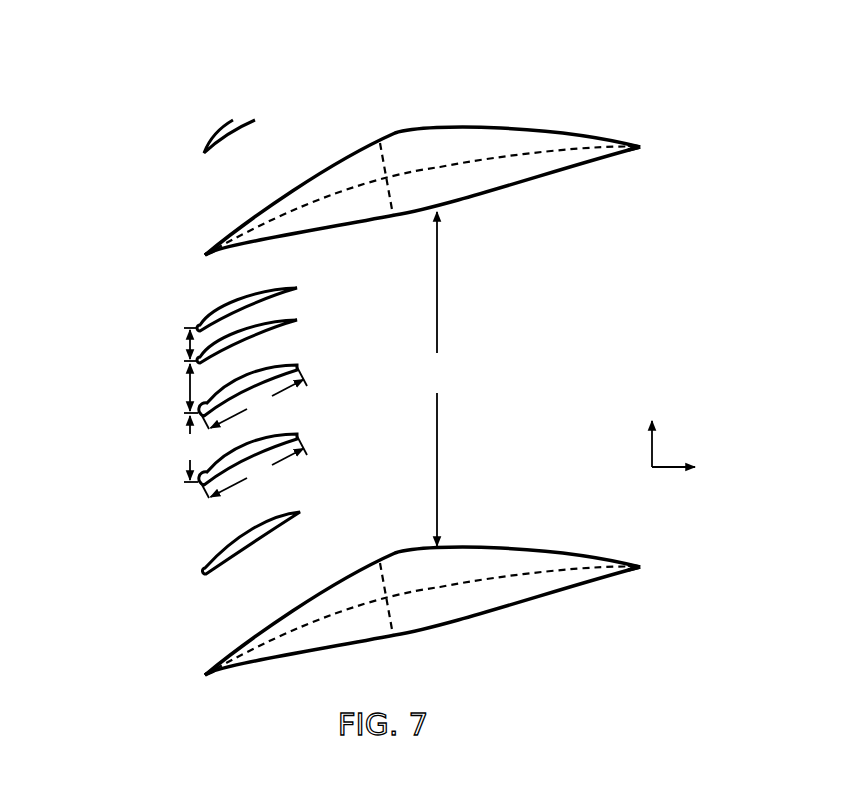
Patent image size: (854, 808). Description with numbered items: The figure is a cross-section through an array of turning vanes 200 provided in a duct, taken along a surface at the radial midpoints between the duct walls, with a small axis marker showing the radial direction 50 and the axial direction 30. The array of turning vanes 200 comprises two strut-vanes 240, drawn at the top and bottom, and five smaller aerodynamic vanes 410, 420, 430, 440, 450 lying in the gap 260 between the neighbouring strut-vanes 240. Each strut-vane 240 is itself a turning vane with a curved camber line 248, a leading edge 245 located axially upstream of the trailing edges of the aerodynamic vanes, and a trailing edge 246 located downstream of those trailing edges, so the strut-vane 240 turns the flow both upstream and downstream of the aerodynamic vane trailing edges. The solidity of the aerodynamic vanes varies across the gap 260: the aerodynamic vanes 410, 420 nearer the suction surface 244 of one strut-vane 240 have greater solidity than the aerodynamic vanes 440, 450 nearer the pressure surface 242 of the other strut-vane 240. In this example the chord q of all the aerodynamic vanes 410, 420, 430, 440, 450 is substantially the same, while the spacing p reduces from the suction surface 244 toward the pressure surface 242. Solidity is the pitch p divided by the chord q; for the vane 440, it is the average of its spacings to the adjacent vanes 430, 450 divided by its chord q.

The array of turning vanes 200 is at (133, 145).
The strut-vane 240 is at (443, 147).
The pressure surface 242 is at (493, 188).
The suction surface 244 is at (393, 135).
The leading edge 245 is at (205, 255).
The trailing edge 246 is at (640, 147).
The camber line 248 is at (532, 150).
The gap 260 is at (437, 379).
The aerodynamic vane 410 is at (288, 513).
The aerodynamic vane 420 is at (292, 435).
The aerodynamic vane 430 is at (292, 367).
The aerodynamic vane 440 is at (297, 321).
The aerodynamic vane 450 is at (297, 289).
The radial direction 50 is at (652, 430).
The axial direction 30 is at (692, 470).